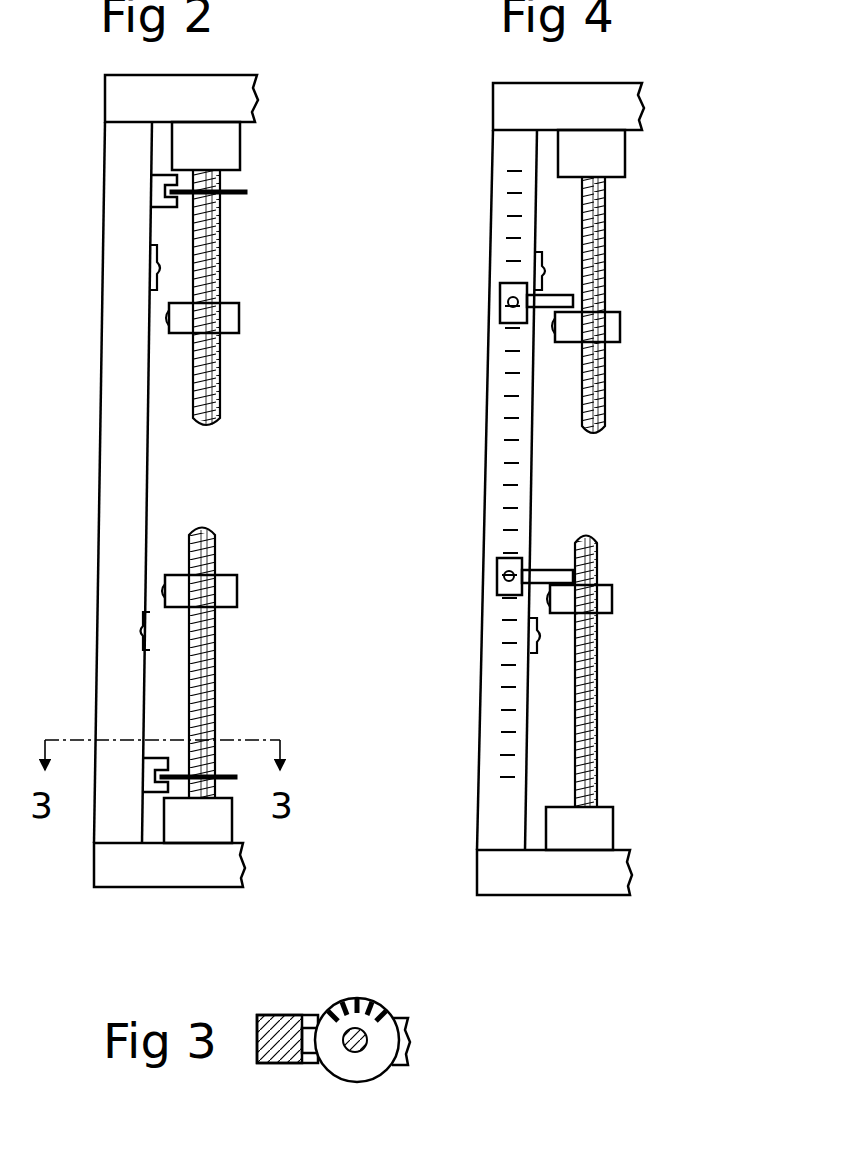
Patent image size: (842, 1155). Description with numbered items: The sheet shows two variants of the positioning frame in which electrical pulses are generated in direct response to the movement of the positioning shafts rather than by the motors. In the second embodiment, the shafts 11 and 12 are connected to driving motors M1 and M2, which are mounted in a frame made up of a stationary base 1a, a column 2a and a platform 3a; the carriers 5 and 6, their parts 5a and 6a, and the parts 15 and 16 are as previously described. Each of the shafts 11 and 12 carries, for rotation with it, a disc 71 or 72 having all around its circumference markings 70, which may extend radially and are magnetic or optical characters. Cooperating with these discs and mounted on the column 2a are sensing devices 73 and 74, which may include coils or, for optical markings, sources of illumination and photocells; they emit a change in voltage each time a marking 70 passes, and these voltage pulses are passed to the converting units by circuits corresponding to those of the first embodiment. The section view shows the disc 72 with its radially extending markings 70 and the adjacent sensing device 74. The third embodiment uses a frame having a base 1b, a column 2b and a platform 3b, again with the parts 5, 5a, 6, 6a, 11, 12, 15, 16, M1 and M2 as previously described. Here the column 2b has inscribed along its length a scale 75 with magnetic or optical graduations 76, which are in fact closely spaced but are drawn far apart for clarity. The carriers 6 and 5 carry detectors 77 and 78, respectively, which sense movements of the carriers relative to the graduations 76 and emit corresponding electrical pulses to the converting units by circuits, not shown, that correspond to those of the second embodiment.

In FIG. 2, the stationary base 1a is at (140, 870).
In FIG. 4, the base 1b is at (505, 878).
In FIG. 2, the column 2a is at (118, 420).
In FIG. 4, the column 2b is at (496, 432).
In FIG. 2, the platform 3a is at (232, 91).
In FIG. 4, the platform 3b is at (630, 101).
In FIG. 2, the carrier 5 is at (222, 590).
In FIG. 4, the carrier 5 is at (598, 605).
In FIG. 2, the carrier part 5a is at (162, 591).
In FIG. 4, the carrier part 5a is at (548, 595).
In FIG. 2, the carrier 6 is at (225, 318).
In FIG. 4, the carrier 6 is at (605, 328).
In FIG. 2, the carrier part 6a is at (165, 318).
In FIG. 4, the carrier part 6a is at (553, 326).
In FIG. 2, the positioning shaft 11 is at (205, 428).
In FIG. 4, the positioning shaft 11 is at (598, 432).
In FIG. 2, the positioning shaft 12 is at (202, 526).
In FIG. 4, the positioning shaft 12 is at (595, 548).
In FIG. 2, the frame part 15 is at (150, 258).
In FIG. 4, the frame part 15 is at (545, 270).
In FIG. 2, the frame part 16 is at (145, 630).
In FIG. 4, the frame part 16 is at (540, 636).
In FIG. 3, the markings 70 is at (330, 1008).
In FIG. 2, the disc 71 is at (232, 196).
In FIG. 2, the disc 72 is at (236, 762).
In FIG. 3, the disc 72 is at (365, 1068).
In FIG. 2, the sensing device 73 is at (165, 206).
In FIG. 2, the sensing device 74 is at (158, 748).
In FIG. 3, the sensing device 74 is at (310, 1068).
In FIG. 4, the scale 75 is at (504, 228).
In FIG. 4, the graduations 76 is at (500, 368).
In FIG. 4, the detector 77 is at (497, 303).
In FIG. 4, the detector 78 is at (494, 576).
In FIG. 2, the driving motor M1 is at (228, 143).
In FIG. 4, the driving motor M1 is at (612, 150).
In FIG. 2, the driving motor M2 is at (215, 830).
In FIG. 4, the driving motor M2 is at (560, 830).